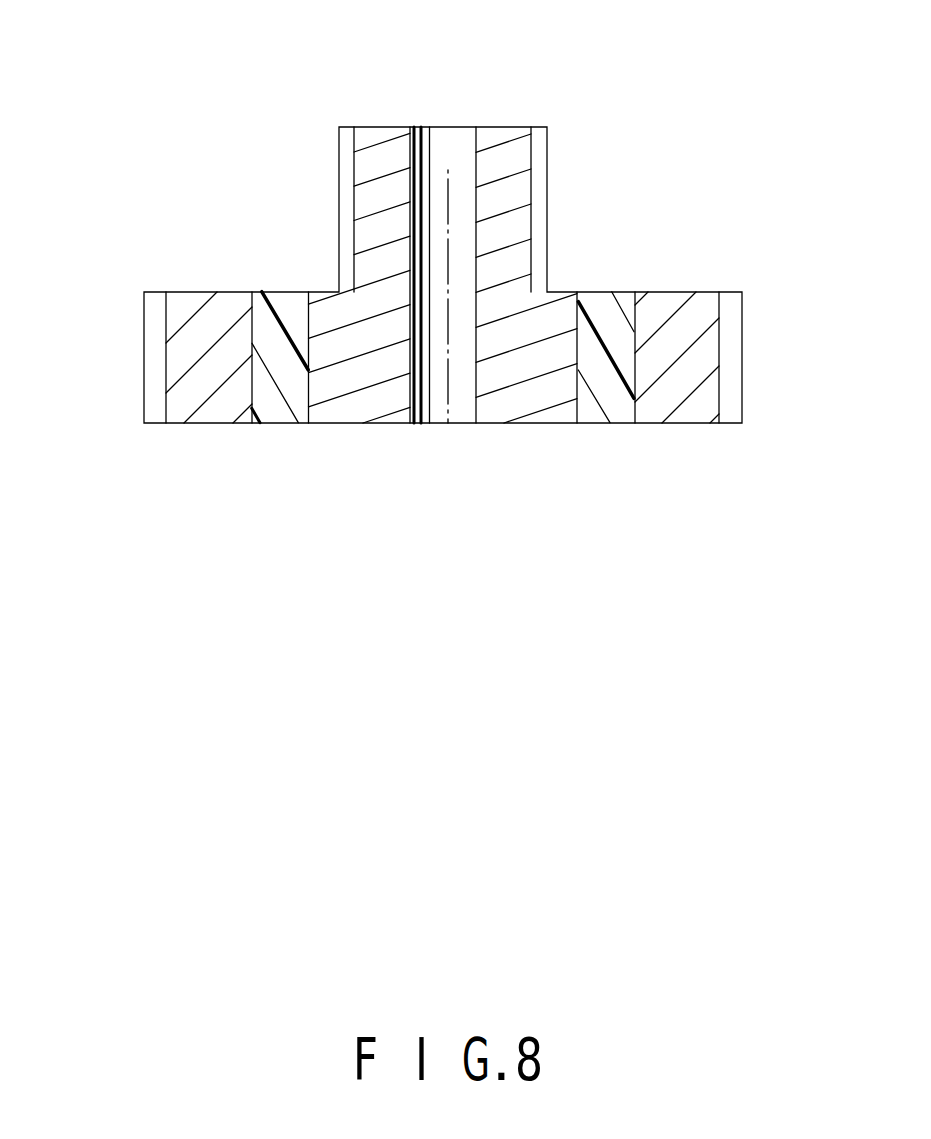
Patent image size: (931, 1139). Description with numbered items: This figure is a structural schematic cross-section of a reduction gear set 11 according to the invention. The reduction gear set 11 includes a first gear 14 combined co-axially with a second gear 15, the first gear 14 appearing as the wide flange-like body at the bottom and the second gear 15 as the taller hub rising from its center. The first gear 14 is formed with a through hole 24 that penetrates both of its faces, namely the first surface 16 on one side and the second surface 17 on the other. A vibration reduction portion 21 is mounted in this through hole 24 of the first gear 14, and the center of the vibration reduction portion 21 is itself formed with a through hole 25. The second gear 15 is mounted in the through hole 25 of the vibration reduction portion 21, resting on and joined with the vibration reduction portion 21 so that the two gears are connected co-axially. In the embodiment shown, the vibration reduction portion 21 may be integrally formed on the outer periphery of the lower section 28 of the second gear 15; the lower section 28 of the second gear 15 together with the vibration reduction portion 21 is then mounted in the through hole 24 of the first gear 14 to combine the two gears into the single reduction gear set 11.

The reduction gear set 11 is at (612, 168).
The first gear 14 is at (147, 388).
The second gear 15 is at (342, 175).
The first surface 16 is at (678, 292).
The second surface 17 is at (220, 423).
The vibration reduction portion 21 is at (597, 382).
The through hole 24 is at (250, 330).
The through hole 25 is at (308, 347).
The lower section 28 is at (498, 157).